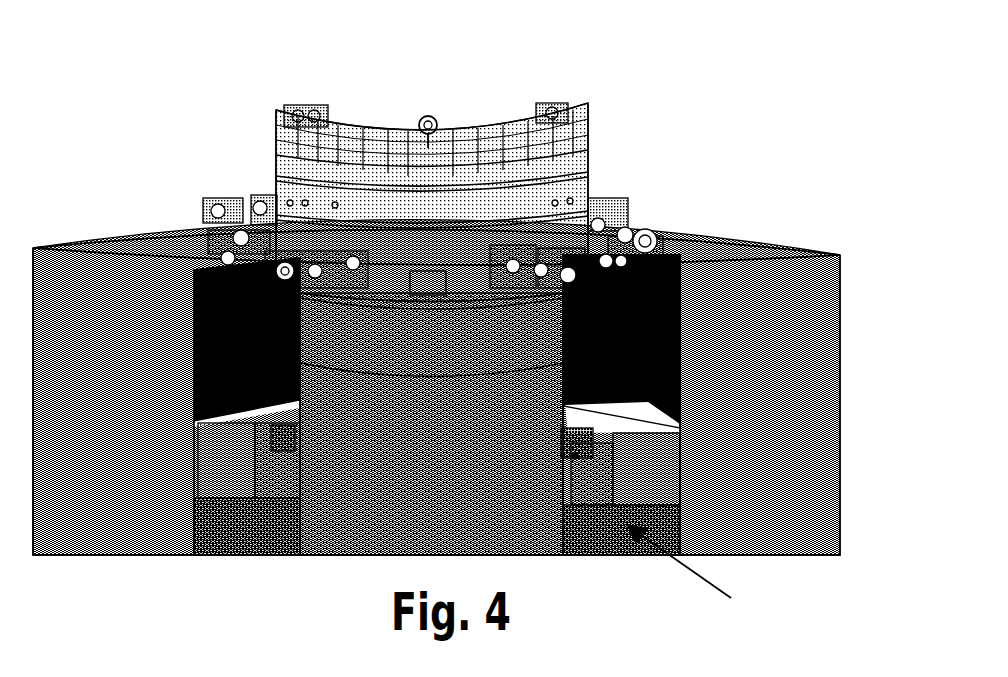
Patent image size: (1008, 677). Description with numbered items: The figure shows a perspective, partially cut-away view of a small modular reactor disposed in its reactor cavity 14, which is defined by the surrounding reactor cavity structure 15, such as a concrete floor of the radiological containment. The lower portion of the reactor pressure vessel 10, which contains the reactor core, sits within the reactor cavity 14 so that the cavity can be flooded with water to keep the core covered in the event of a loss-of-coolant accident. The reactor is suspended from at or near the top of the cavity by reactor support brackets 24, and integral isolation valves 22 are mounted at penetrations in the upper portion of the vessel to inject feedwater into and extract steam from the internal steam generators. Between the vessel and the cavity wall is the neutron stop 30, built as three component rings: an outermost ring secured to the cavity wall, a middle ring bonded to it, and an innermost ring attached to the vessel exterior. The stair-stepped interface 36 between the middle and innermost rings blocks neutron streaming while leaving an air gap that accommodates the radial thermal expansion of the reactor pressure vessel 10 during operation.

The reactor pressure vessel 10 is at (373, 487).
The reactor cavity 14 is at (699, 575).
The reactor cavity structure 15 is at (807, 323).
The integral isolation valves 22 is at (622, 225).
The reactor support brackets 24 is at (227, 320).
The neutron stop 30 is at (731, 366).
The interface 36 is at (567, 448).